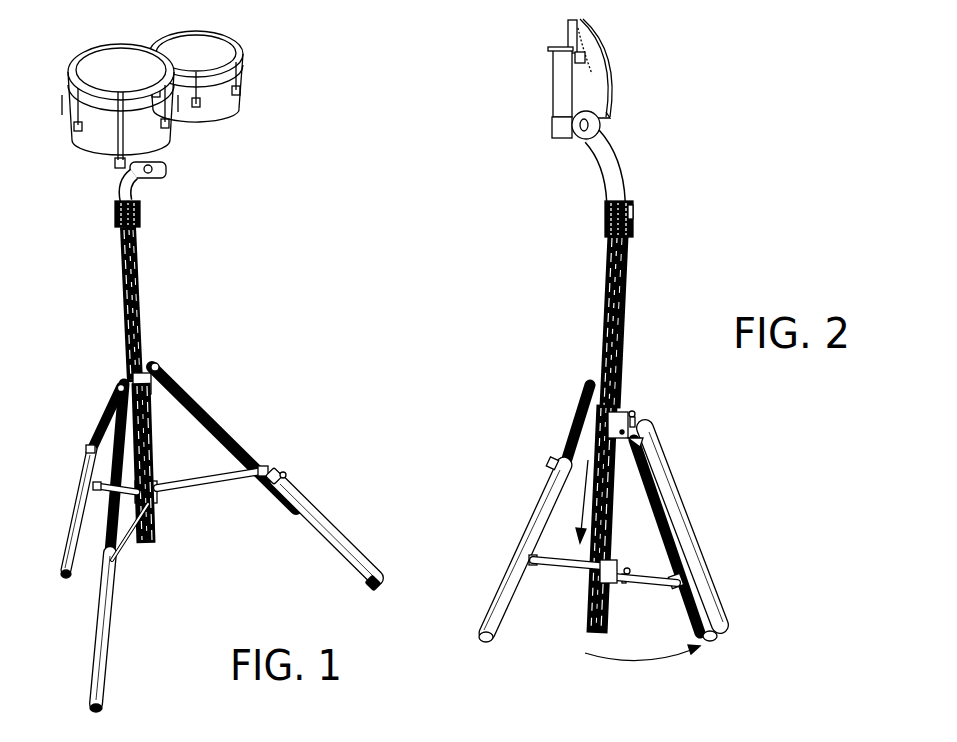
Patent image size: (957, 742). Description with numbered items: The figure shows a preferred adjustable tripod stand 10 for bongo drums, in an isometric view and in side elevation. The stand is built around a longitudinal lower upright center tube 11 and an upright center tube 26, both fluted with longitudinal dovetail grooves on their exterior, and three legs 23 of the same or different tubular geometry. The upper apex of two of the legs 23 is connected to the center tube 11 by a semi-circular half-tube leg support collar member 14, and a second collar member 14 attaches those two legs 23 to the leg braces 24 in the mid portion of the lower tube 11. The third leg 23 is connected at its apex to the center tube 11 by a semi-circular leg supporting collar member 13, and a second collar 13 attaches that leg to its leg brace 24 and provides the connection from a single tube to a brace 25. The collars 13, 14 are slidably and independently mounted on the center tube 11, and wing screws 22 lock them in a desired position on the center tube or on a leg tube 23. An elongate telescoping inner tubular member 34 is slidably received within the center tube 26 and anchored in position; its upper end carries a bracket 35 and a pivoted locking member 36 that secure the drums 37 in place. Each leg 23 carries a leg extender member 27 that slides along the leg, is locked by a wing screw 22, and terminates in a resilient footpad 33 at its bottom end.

In FIG. 1, the adjustable tripod stand 10 is at (284, 330).
In FIG. 2, the adjustable tripod stand 10 is at (541, 384).
In FIG. 1, the lower upright center tube 11 is at (152, 450).
In FIG. 2, the lower upright center tube 11 is at (586, 622).
In FIG. 1, the semi-circular leg supporting collar member 13 is at (184, 358).
In FIG. 2, the semi-circular leg supporting collar member 13 is at (638, 444).
In FIG. 1, the semi-circular leg support collar member 14 is at (148, 394).
In FIG. 2, the semi-circular leg support collar member 14 is at (587, 583).
In FIG. 1, the wing screw 22 is at (287, 475).
In FIG. 2, the wing screw 22 is at (633, 412).
In FIG. 1, the leg 23 is at (90, 408).
In FIG. 1, the leg brace 24 is at (230, 483).
In FIG. 1, the brace 25 is at (204, 489).
In FIG. 1, the upright center tube 26 is at (140, 278).
In FIG. 2, the upright center tube 26 is at (606, 293).
In FIG. 1, the leg extender member 27 is at (343, 537).
In FIG. 2, the leg extender member 27 is at (684, 510).
In FIG. 1, the footpad 33 is at (370, 586).
In FIG. 1, the telescoping inner tubular member 34 is at (118, 191).
In FIG. 2, the telescoping inner tubular member 34 is at (605, 170).
In FIG. 1, the bracket 35 is at (167, 172).
In FIG. 2, the bracket 35 is at (552, 133).
In FIG. 2, the pivoted locking member 36 is at (607, 68).
In FIG. 1, the drums 37 is at (98, 85).